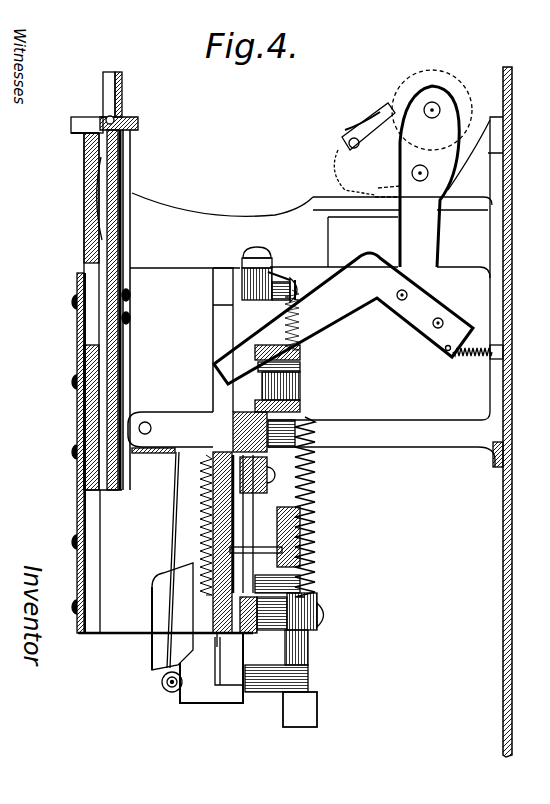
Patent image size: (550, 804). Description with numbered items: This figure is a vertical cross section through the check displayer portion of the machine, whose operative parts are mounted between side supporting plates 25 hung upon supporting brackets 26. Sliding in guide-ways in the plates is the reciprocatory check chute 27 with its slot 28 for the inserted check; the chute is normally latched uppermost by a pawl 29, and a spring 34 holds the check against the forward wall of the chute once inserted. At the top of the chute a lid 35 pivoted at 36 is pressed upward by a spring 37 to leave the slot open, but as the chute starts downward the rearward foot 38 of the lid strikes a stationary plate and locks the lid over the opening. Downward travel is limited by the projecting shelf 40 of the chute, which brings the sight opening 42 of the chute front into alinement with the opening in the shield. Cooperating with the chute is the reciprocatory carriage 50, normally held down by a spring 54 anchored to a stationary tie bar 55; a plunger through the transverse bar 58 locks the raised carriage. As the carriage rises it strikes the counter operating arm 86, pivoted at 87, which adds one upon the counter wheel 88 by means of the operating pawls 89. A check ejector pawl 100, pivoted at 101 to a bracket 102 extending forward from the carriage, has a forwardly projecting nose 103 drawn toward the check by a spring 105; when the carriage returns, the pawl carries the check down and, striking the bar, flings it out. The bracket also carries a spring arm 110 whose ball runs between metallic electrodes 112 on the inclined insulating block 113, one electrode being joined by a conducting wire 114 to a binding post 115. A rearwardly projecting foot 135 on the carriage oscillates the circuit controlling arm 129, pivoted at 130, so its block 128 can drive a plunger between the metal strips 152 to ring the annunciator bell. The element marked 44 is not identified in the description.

The side supporting plates 25 is at (185, 340).
The supporting brackets 26 is at (397, 422).
The reciprocatory check chute 27 is at (85, 183).
The slot 28 is at (100, 155).
The pawl 29 is at (133, 157).
The spring 34 is at (96, 213).
The lid 35 is at (118, 72).
The pivot 36 is at (137, 94).
The spring 37 is at (82, 104).
The rearward foot 38 is at (140, 127).
The projecting shelf 40 is at (72, 132).
The sight opening 42 is at (91, 286).
The side plate 44 is at (84, 412).
The reciprocatory frame or carriage 50 is at (214, 322).
The spring 54 is at (318, 436).
The stationary tie bar 55 is at (306, 562).
The transverse bar 58 is at (322, 507).
The counter operating arm 86 is at (358, 318).
The pivot 87 is at (427, 177).
The counter wheel 88 is at (441, 82).
The operating pawls 89 is at (375, 116).
The check ejector pawl 100 is at (150, 449).
The pivot 101 is at (146, 422).
The bracket 102 is at (197, 432).
The forwardly projecting nose 103 is at (106, 492).
The spring 105 is at (203, 498).
The spring arm 110 is at (168, 620).
The metallic electrodes 112 is at (192, 578).
The block 113 is at (158, 645).
The conducting wire 114 is at (168, 692).
The binding post 115 is at (308, 678).
The block 128 is at (303, 556).
The circuit controlling arm 129 is at (301, 531).
The pivot 130 is at (268, 543).
The rearwardly projecting foot 135 is at (225, 680).
The metal strips 152 is at (300, 716).